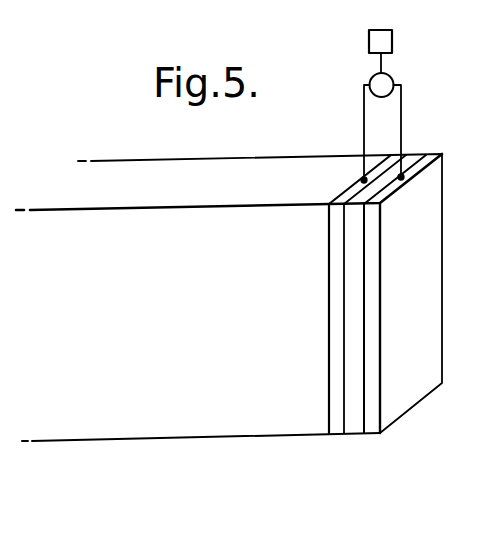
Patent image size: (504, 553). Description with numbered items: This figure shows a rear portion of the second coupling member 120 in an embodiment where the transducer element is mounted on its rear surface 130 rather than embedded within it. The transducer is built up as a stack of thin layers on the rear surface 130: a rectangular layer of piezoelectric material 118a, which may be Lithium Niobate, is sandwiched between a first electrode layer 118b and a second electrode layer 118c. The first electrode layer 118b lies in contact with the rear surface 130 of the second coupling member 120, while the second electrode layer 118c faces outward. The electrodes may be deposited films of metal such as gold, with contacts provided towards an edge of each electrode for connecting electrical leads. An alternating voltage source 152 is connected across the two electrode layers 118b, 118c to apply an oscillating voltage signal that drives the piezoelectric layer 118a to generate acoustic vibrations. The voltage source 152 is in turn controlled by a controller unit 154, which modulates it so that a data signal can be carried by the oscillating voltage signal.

The second coupling member 120 is at (142, 418).
The rear surface 130 is at (331, 413).
The layer of piezoelectric material 118a is at (352, 437).
The first electrode layer 118b is at (338, 435).
The second electrode layer 118c is at (372, 437).
The alternating voltage source 152 is at (392, 76).
The controller unit 154 is at (393, 37).